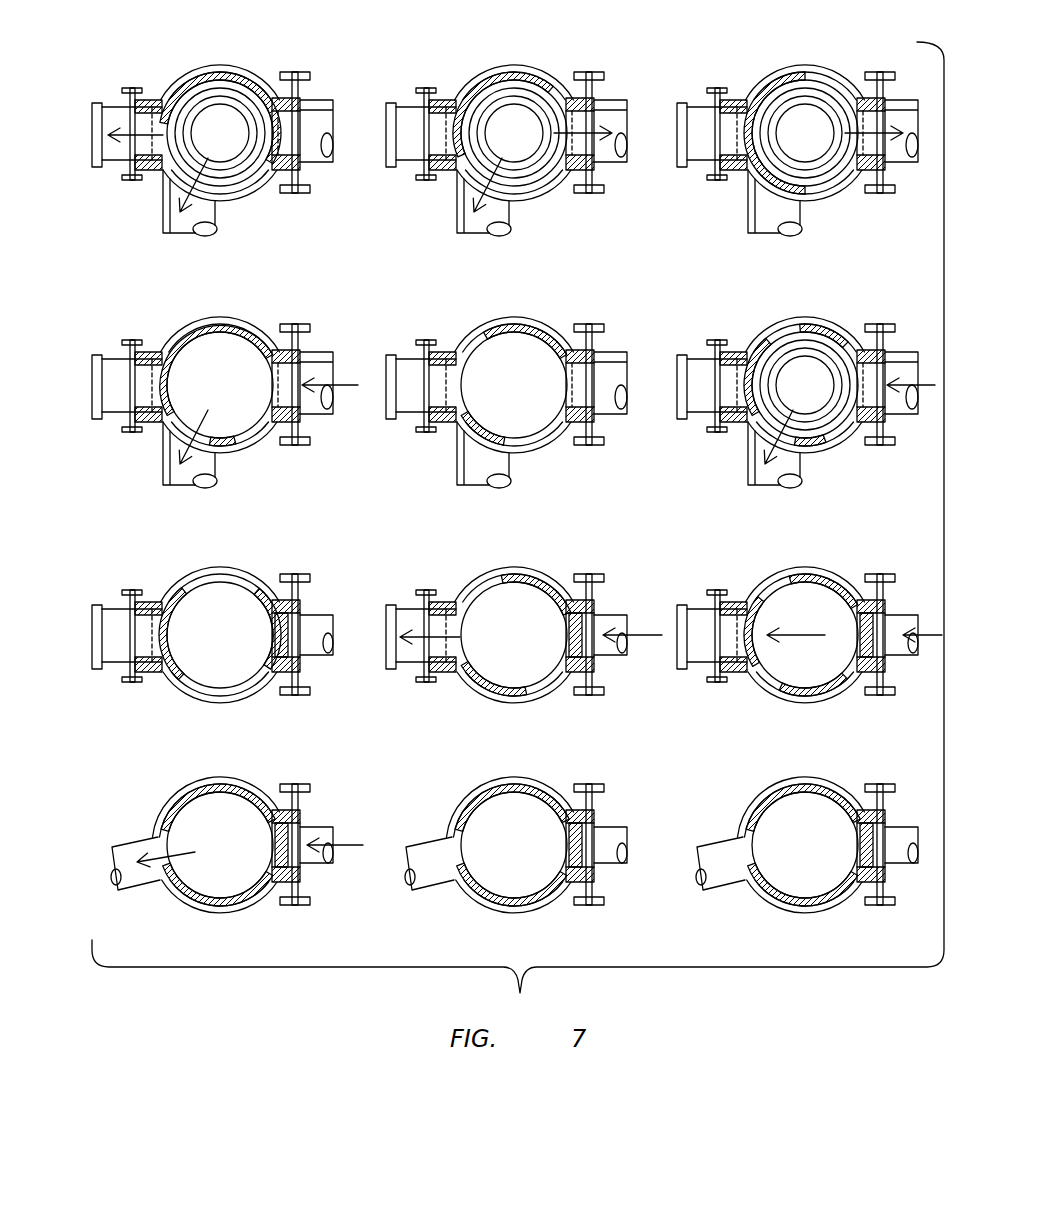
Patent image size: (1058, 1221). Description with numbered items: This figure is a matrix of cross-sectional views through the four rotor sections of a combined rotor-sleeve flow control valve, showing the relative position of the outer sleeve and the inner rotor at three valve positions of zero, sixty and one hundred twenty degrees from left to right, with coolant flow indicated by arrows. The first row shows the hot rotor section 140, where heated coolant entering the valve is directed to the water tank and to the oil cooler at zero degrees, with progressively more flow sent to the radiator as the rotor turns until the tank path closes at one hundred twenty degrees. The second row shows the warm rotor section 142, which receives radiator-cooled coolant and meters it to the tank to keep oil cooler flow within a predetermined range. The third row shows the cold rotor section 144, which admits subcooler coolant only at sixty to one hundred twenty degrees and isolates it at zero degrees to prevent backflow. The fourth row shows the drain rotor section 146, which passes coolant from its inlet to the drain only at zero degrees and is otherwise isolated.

The hot rotor section 140 is at (128, 244).
The warm rotor section 142 is at (128, 494).
The cold rotor section 144 is at (128, 722).
The drain rotor section 146 is at (164, 942).